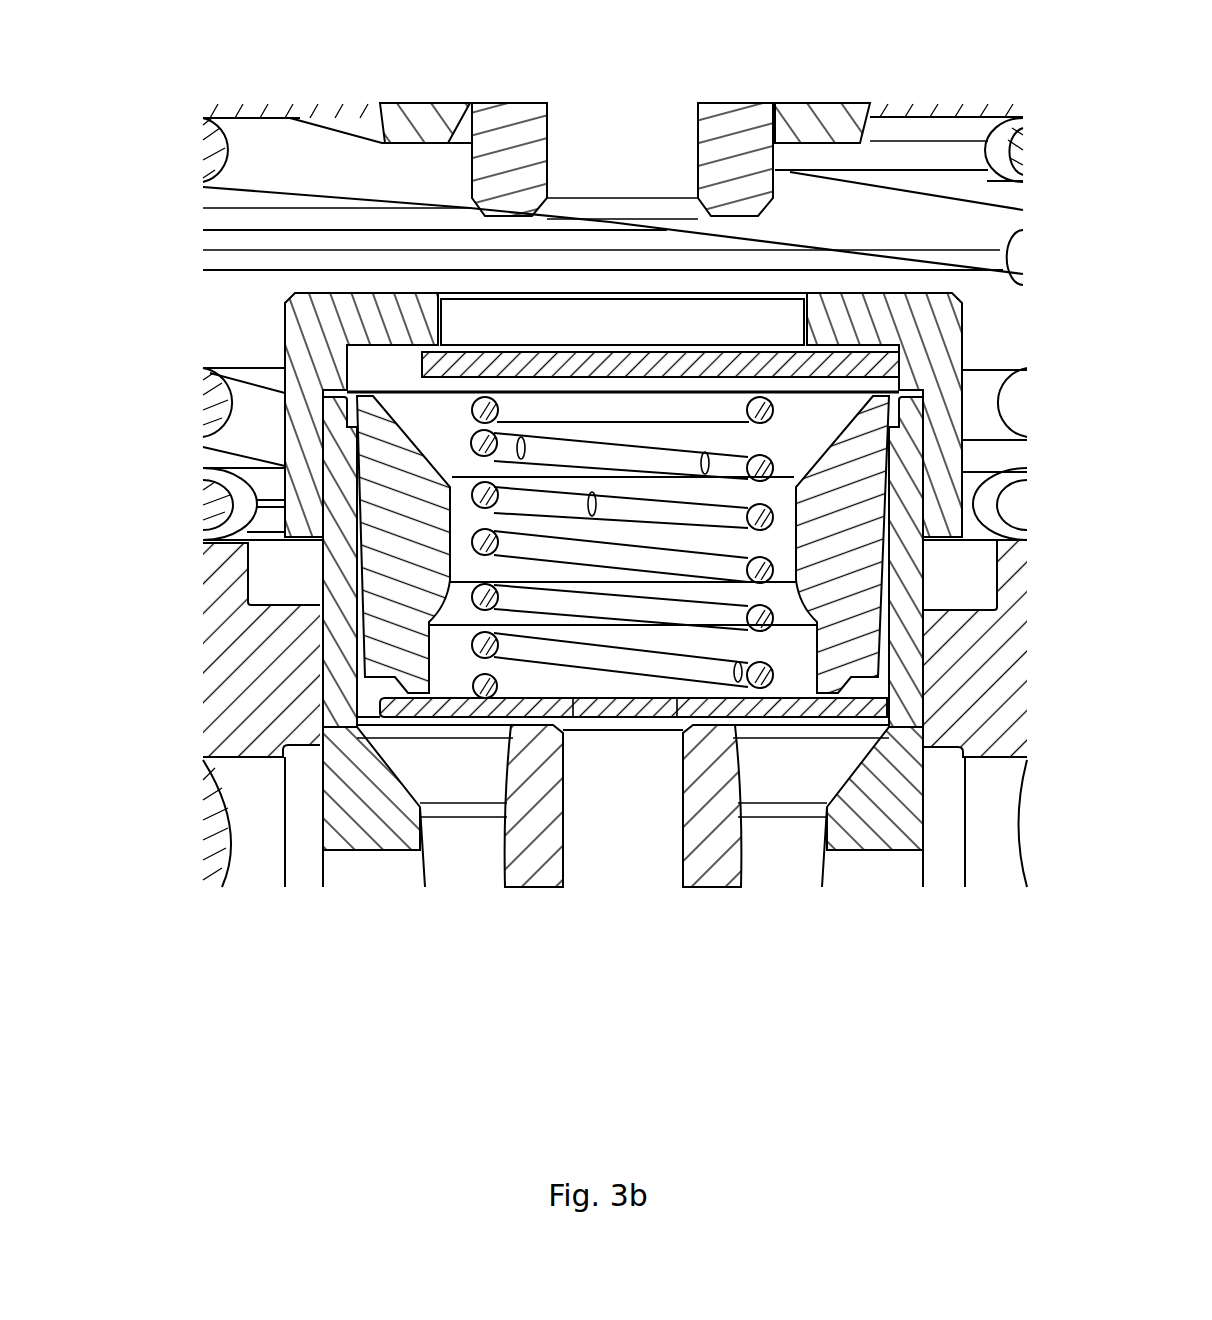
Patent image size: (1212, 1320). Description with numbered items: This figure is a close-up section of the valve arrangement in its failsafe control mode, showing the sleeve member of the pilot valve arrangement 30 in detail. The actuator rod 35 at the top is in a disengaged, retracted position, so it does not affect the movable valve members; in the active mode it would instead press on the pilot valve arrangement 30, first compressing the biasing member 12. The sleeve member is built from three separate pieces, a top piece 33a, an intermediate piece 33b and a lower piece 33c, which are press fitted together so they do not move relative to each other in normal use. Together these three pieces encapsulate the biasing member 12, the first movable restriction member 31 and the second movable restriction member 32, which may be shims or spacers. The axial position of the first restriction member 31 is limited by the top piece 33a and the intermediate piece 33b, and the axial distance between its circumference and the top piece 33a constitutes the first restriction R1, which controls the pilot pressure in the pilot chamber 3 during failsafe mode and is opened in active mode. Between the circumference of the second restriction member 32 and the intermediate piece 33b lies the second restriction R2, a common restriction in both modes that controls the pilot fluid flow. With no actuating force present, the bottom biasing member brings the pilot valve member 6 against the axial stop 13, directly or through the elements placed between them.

The pilot chamber 3 is at (368, 275).
The pilot valve member 6 is at (530, 890).
The biasing member 12 is at (512, 683).
The axial stop 13 is at (875, 337).
The pilot valve arrangement 30 is at (215, 298).
The first movable restriction member 31 is at (640, 356).
The second movable restriction member 32 is at (790, 707).
The top piece 33a is at (300, 432).
The intermediate piece 33b is at (400, 598).
The lower piece 33c is at (345, 678).
The actuator rod 35 is at (737, 130).
The first restriction R1 is at (422, 351).
The second restriction R2 is at (380, 700).